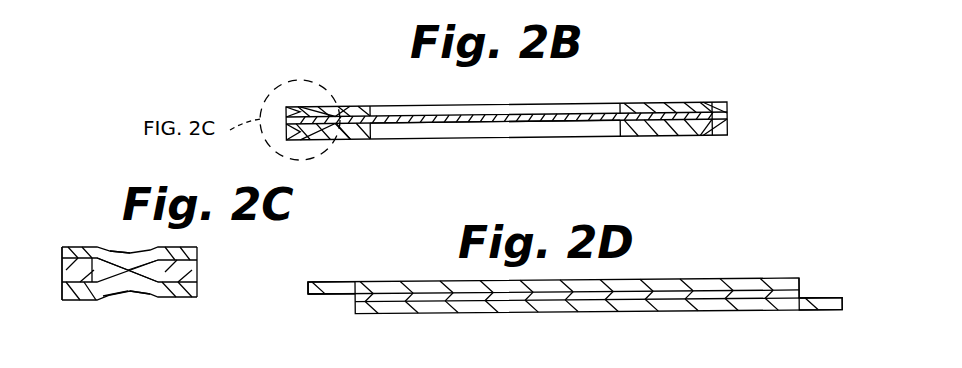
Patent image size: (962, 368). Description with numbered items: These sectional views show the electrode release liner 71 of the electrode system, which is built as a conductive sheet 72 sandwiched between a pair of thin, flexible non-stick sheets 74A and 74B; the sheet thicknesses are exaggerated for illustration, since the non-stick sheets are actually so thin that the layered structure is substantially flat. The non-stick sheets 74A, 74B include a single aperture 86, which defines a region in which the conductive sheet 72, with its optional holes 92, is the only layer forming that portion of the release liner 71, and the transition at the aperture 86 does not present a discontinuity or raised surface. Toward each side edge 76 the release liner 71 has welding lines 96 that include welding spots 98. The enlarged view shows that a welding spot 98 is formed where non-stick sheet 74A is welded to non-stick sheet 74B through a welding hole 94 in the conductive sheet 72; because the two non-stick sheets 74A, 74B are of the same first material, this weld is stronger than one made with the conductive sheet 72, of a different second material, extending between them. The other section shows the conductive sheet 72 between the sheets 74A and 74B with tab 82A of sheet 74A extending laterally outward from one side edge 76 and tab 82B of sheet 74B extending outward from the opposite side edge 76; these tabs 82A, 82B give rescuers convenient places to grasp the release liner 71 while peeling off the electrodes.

In FIG. 2B, the electrode release liner 71 is at (356, 103).
In FIG. 2D, the electrode release liner 71 is at (576, 320).
In FIG. 2B, the conductive sheet 72 is at (388, 128).
In FIG. 2C, the conductive sheet 72 is at (192, 276).
In FIG. 2D, the conductive sheet 72 is at (801, 297).
In FIG. 2B, the non-stick sheet 74A is at (682, 78).
In FIG. 2C, the non-stick sheet 74A is at (104, 222).
In FIG. 2D, the non-stick sheet 74A is at (687, 273).
In FIG. 2B, the non-stick sheet 74B is at (691, 139).
In FIG. 2C, the non-stick sheet 74B is at (180, 302).
In FIG. 2D, the non-stick sheet 74B is at (742, 316).
In FIG. 2B, the side edge 76 is at (285, 110).
In FIG. 2C, the side edge 76 is at (62, 266).
In FIG. 2D, the side edge 76 is at (348, 280).
In FIG. 2D, the tab 82A is at (335, 297).
In FIG. 2D, the tab 82B is at (838, 312).
In FIG. 2B, the aperture 86 is at (618, 102).
In FIG. 2B, the holes 92 is at (575, 113).
In FIG. 2B, the welding holes 94 is at (292, 138).
In FIG. 2C, the welding holes 94 is at (163, 248).
In FIG. 2C, the welding lines 96 is at (122, 243).
In FIG. 2B, the welding spots 98 is at (303, 112).
In FIG. 2C, the welding spots 98 is at (128, 289).